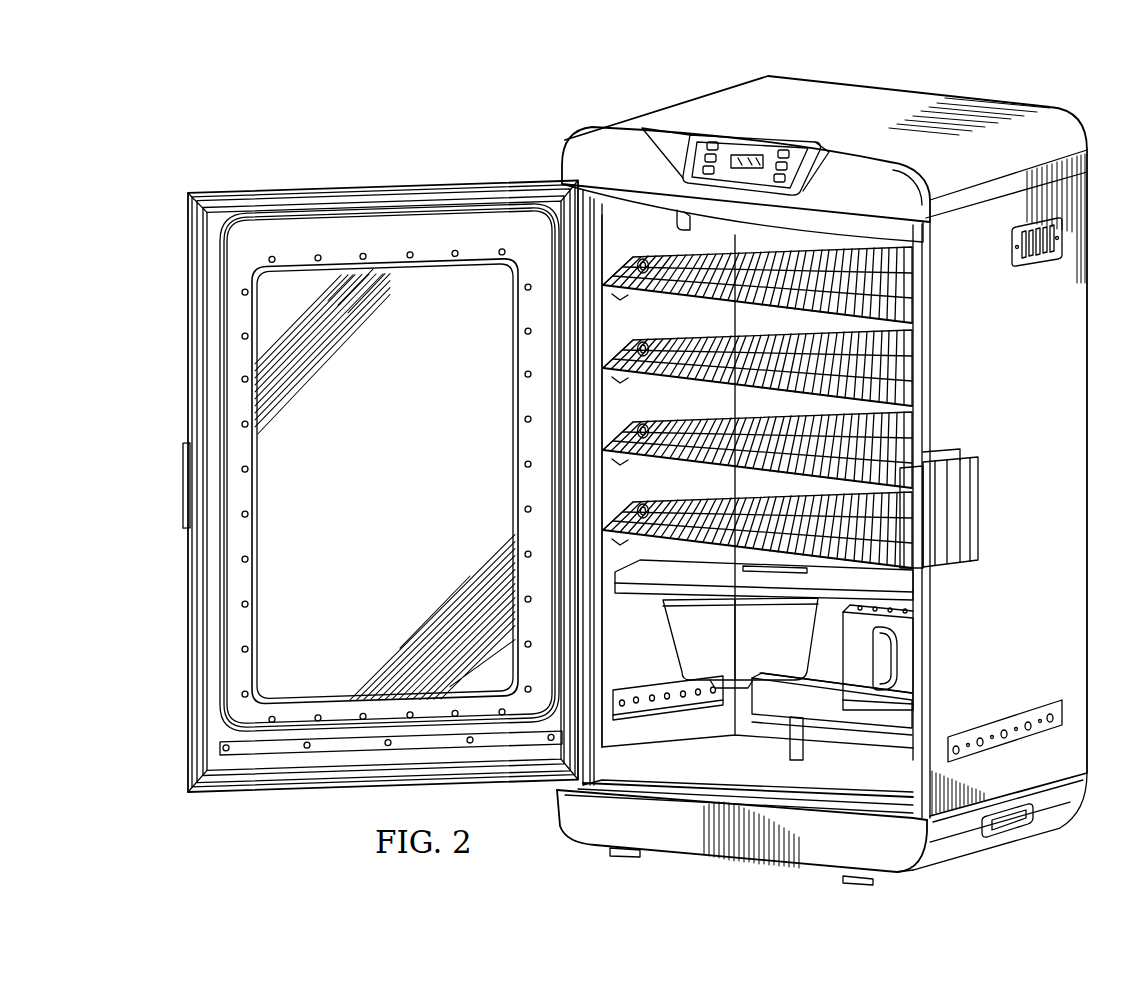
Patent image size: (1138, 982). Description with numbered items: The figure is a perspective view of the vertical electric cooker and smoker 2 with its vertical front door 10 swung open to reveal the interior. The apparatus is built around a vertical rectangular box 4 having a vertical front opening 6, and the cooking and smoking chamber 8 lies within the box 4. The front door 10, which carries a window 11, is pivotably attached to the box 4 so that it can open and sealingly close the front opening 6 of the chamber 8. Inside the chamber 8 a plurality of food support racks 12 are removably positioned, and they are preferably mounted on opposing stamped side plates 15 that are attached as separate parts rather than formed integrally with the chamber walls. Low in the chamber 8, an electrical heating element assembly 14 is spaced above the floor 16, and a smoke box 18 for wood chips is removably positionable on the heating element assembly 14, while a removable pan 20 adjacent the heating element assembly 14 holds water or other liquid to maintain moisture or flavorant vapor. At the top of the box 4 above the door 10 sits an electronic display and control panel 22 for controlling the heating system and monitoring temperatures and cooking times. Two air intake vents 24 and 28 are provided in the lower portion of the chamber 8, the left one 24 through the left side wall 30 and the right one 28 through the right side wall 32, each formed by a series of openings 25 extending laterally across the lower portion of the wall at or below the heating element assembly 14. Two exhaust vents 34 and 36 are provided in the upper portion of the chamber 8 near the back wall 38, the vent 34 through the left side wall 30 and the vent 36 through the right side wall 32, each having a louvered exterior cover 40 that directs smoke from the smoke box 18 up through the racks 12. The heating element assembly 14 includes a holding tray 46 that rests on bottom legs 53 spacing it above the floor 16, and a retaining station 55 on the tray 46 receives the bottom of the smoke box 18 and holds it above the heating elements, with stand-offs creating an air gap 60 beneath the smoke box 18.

The vertical electric cooker and smoker 2 is at (333, 123).
The vertical rectangular box 4 is at (1090, 470).
The vertical front opening 6 is at (615, 215).
The cooking and smoking chamber 8 is at (625, 325).
The vertical front door 10 is at (258, 193).
The window 11 is at (396, 502).
The food support racks 12 is at (918, 253).
The electrical heating element assembly 14 is at (785, 713).
The stamped side plates 15 is at (615, 417).
The floor 16 is at (715, 785).
The smoke box 18 is at (900, 650).
The removable pan 20 is at (672, 606).
The electronic display and control panel 22 is at (768, 150).
The air intake vent 24 is at (640, 690).
The openings 25 is at (1022, 722).
The air intake vent 28 is at (1005, 738).
The left side wall 30 is at (595, 675).
The right side wall 32 is at (1090, 385).
The exhaust vent 34 is at (672, 222).
The exhaust vent 36 is at (1033, 258).
The back wall 38 is at (850, 240).
The louvered exterior cover 40 is at (1012, 250).
The holding tray 46 is at (893, 728).
The bottom legs 53 is at (805, 730).
The retaining station 55 is at (905, 718).
The air gap 60 is at (905, 700).